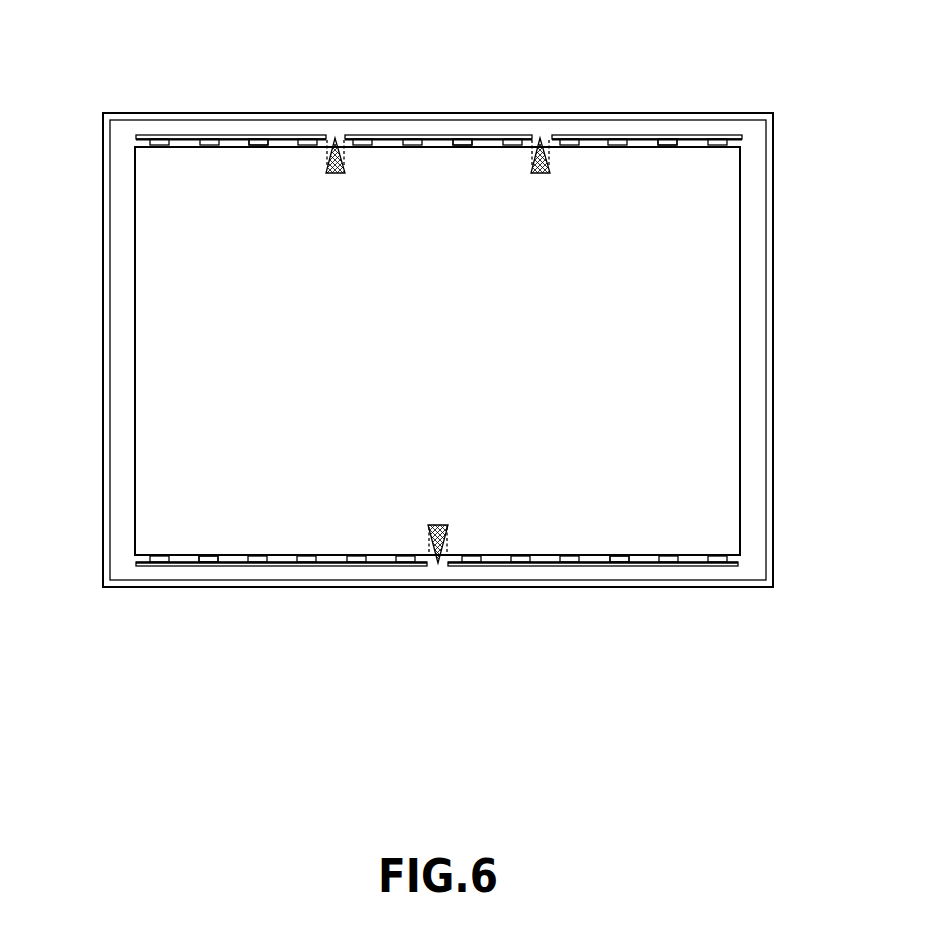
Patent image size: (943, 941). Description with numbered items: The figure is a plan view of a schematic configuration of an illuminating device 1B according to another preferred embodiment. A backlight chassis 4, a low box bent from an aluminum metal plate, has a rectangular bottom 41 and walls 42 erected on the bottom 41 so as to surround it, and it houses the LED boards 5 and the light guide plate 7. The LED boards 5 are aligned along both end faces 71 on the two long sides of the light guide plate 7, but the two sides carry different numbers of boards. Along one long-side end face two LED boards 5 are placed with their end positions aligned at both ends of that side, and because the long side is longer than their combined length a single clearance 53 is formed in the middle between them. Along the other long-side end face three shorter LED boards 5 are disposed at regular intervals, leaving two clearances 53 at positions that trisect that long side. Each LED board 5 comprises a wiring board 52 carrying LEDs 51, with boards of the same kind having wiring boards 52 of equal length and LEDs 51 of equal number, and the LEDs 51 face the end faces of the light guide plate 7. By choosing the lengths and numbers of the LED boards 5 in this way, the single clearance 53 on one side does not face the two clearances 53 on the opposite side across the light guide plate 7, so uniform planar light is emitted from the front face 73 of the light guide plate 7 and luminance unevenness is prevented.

The illuminating device 1B is at (778, 705).
The backlight chassis 4 is at (776, 327).
The bottom 41 is at (753, 270).
The walls 42 is at (737, 588).
The light guide plate 7 is at (712, 432).
The end faces 71 is at (173, 148).
The front face 73 is at (732, 215).
The LED boards 5 is at (256, 137).
The LEDs 51 is at (210, 140).
The wiring boards 52 is at (136, 135).
The clearances 53 is at (336, 136).